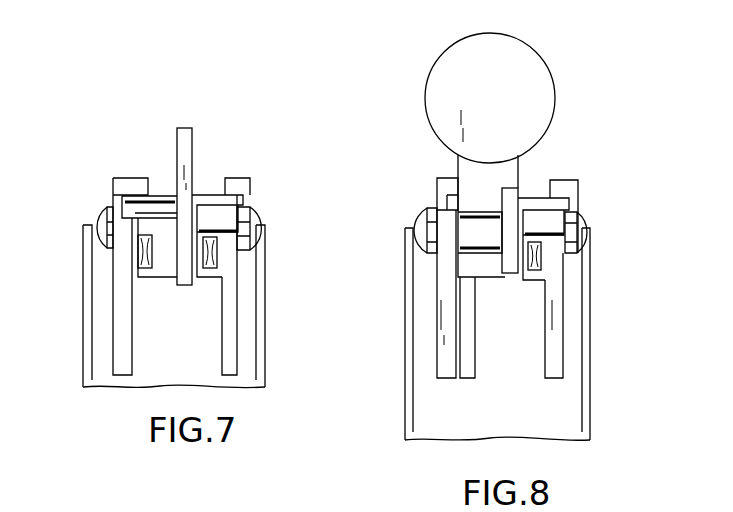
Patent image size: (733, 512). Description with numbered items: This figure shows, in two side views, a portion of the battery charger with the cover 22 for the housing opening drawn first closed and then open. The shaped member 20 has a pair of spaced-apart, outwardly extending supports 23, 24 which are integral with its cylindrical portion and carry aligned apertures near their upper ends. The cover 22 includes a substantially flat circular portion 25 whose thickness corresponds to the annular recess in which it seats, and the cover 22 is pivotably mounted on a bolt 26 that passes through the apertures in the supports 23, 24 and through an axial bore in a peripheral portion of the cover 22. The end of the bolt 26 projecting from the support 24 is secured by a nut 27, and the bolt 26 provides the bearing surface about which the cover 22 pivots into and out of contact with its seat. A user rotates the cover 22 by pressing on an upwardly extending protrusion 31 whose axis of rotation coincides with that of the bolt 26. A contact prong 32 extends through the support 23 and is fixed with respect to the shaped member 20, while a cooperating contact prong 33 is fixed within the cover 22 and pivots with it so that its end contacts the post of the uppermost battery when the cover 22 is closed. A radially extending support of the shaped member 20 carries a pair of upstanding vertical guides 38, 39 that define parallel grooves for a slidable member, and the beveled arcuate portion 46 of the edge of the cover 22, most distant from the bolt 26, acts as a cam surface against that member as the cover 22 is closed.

In FIG. 7, the shaped member 20 is at (285, 327).
In FIG. 8, the shaped member 20 is at (612, 395).
In FIG. 8, the cover 22 is at (578, 138).
In FIG. 7, the support 23 is at (230, 357).
In FIG. 8, the support 23 is at (557, 337).
In FIG. 7, the support 24 is at (122, 330).
In FIG. 8, the support 24 is at (445, 352).
In FIG. 7, the circular portion 25 is at (210, 181).
In FIG. 8, the circular portion 25 is at (543, 102).
In FIG. 7, the bolt 26 is at (100, 220).
In FIG. 8, the bolt 26 is at (422, 226).
In FIG. 7, the nut 27 is at (253, 227).
In FIG. 8, the nut 27 is at (583, 233).
In FIG. 7, the protrusion 31 is at (175, 134).
In FIG. 8, the protrusion 31 is at (512, 198).
In FIG. 7, the contact prong 32 is at (216, 262).
In FIG. 8, the contact prong 32 is at (541, 262).
In FIG. 7, the contact prong 33 is at (143, 258).
In FIG. 8, the contact prong 33 is at (470, 328).
In FIG. 7, the vertical guide 38 is at (252, 192).
In FIG. 8, the vertical guide 38 is at (580, 192).
In FIG. 7, the vertical guide 39 is at (116, 180).
In FIG. 8, the vertical guide 39 is at (437, 188).
In FIG. 8, the portion of the edge surface 46 is at (457, 41).